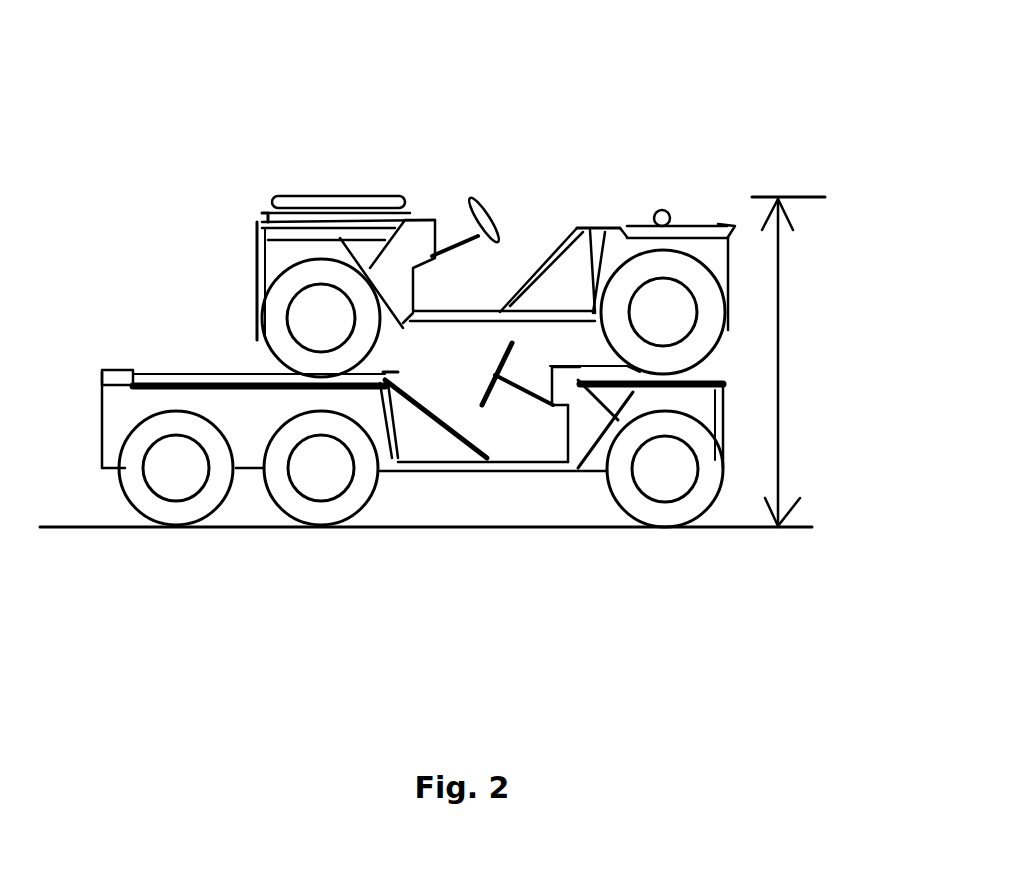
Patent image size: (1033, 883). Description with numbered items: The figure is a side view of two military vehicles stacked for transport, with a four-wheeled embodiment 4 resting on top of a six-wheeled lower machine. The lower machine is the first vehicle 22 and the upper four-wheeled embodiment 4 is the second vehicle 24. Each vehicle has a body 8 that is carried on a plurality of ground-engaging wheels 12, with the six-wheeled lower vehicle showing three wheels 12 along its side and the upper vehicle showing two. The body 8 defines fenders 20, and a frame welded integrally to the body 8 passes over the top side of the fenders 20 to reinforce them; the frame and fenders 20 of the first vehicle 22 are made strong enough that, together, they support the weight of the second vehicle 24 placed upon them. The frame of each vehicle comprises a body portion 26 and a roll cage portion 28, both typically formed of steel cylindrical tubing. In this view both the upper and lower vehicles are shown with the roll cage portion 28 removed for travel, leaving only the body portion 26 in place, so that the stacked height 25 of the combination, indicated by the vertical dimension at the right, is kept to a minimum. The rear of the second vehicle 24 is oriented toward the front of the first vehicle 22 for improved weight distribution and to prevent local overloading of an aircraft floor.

The four-wheeled embodiment 4 is at (645, 226).
The body 8 is at (412, 471).
The ground-engaging wheels 12 is at (670, 527).
The fenders 20 is at (268, 208).
The first vehicle 22 is at (113, 370).
The second vehicle 24 is at (712, 226).
The stacked height 25 is at (780, 357).
The body portion 26 is at (188, 377).
The roll cage portion 28 is at (340, 197).